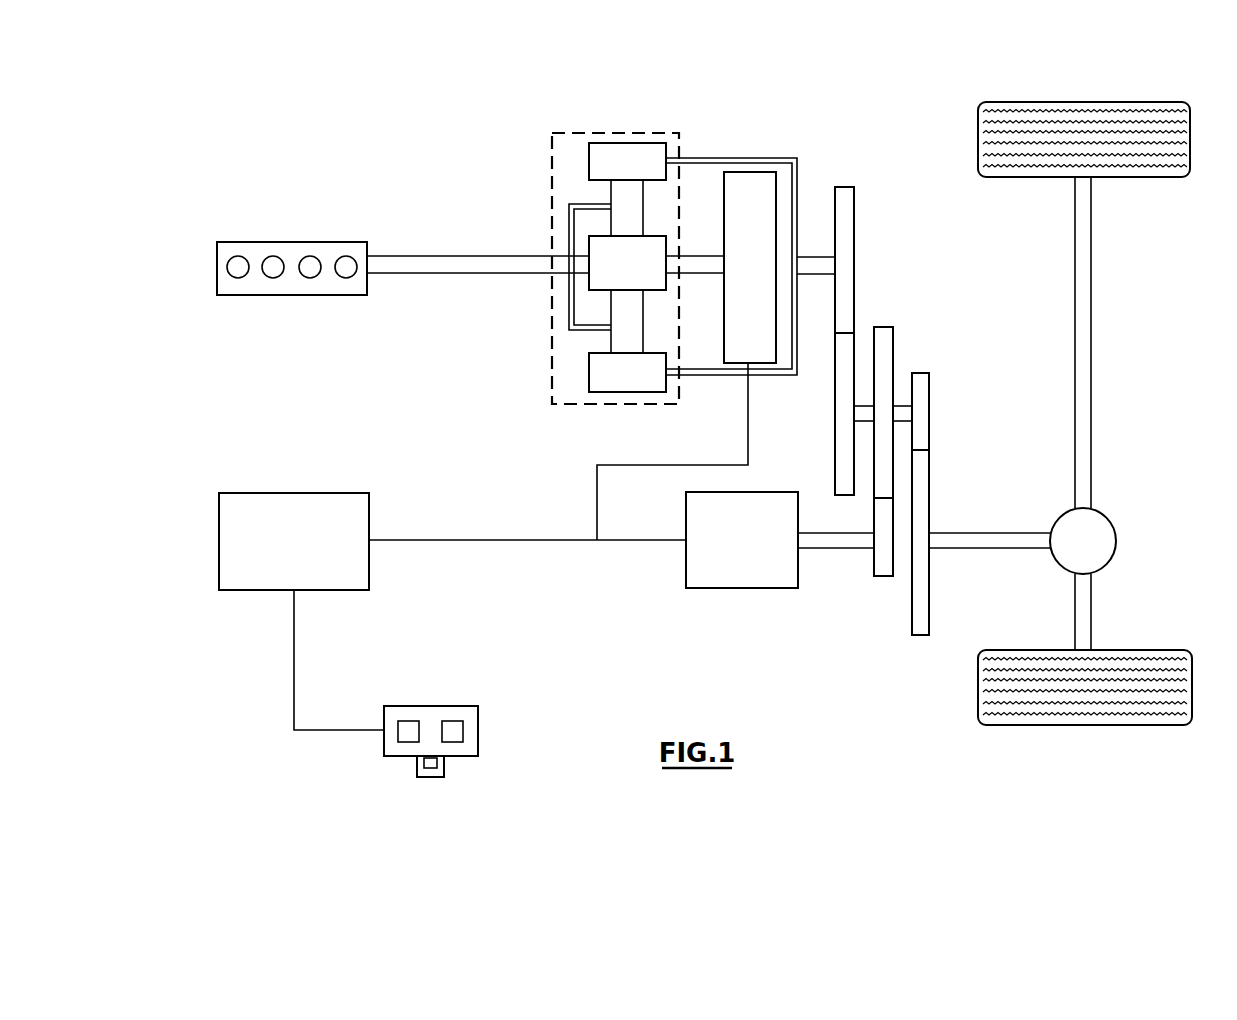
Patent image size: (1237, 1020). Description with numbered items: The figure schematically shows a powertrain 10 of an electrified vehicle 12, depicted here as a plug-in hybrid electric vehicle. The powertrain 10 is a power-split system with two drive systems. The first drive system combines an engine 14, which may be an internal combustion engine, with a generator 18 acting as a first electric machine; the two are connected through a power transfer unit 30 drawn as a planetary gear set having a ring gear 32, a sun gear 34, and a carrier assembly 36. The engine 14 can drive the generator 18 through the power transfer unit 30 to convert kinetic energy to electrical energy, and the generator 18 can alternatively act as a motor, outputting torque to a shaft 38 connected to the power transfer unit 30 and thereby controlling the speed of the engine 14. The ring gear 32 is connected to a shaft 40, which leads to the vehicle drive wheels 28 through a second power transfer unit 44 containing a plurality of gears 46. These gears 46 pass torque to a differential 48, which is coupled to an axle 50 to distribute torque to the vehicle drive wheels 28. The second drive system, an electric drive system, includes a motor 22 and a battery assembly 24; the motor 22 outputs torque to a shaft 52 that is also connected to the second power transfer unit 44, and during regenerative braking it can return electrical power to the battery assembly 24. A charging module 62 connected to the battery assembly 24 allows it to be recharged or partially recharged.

The powertrain 10 is at (416, 152).
The electrified vehicle 12 is at (776, 91).
The engine 14 is at (233, 242).
The generator 18 is at (730, 172).
The motor 22 is at (798, 575).
The battery assembly 24 is at (233, 493).
The vehicle drive wheels 28 is at (1068, 102).
The power transfer unit 30 is at (551, 368).
The ring gear 32 is at (589, 159).
The sun gear 34 is at (589, 245).
The carrier assembly 36 is at (569, 316).
The shaft 38 is at (695, 256).
The shaft 40 is at (815, 257).
The second power transfer unit 44 is at (918, 292).
The gears 46 is at (854, 300).
The differential 48 is at (1108, 563).
The axle 50 is at (1091, 333).
The shaft 52 is at (845, 548).
The charging module 62 is at (478, 720).